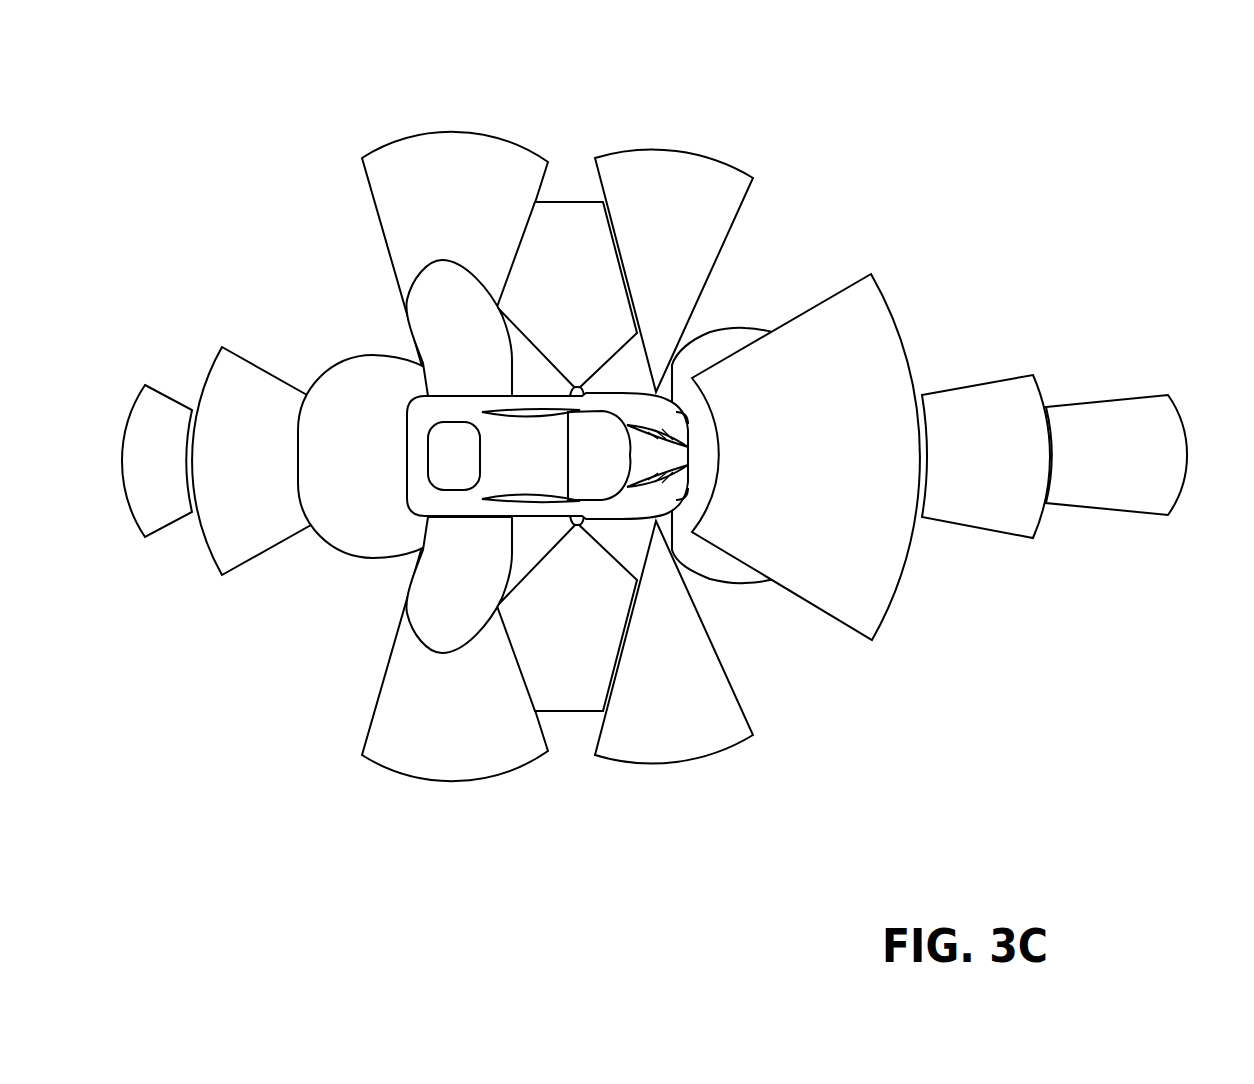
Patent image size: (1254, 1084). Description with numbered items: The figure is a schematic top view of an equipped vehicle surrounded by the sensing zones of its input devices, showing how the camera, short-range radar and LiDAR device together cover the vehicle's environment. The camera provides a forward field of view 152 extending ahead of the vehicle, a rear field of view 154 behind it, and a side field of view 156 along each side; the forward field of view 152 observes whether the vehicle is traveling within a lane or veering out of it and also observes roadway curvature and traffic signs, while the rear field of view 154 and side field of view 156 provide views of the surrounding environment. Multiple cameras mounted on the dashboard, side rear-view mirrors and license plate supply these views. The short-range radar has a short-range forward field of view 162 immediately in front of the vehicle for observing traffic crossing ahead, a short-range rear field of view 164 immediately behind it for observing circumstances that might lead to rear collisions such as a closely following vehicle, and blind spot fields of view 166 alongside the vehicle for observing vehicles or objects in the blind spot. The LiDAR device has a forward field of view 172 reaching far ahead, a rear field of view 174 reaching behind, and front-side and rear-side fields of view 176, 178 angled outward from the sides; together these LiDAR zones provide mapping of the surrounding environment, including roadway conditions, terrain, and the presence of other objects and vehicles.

The forward field of view 152 is at (873, 285).
The rear field of view 154 is at (230, 558).
The side field of view 156 is at (562, 208).
The short-range forward field of view 162 is at (743, 577).
The short-range rear field of view 164 is at (327, 390).
The blind spot field of view 166 is at (412, 330).
The forward field of view 172 is at (1015, 383).
The rear field of view 174 is at (150, 390).
The front-side field of view 176 is at (670, 160).
The rear-side field of view 178 is at (450, 135).